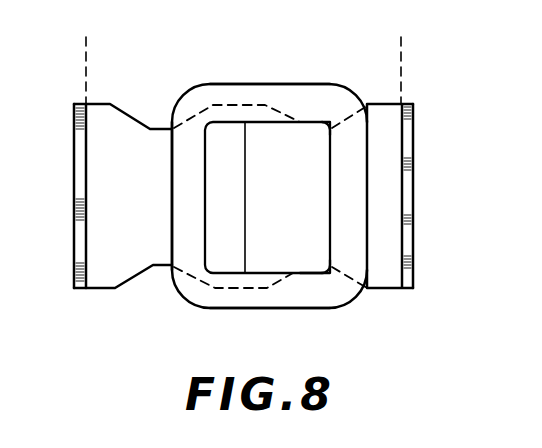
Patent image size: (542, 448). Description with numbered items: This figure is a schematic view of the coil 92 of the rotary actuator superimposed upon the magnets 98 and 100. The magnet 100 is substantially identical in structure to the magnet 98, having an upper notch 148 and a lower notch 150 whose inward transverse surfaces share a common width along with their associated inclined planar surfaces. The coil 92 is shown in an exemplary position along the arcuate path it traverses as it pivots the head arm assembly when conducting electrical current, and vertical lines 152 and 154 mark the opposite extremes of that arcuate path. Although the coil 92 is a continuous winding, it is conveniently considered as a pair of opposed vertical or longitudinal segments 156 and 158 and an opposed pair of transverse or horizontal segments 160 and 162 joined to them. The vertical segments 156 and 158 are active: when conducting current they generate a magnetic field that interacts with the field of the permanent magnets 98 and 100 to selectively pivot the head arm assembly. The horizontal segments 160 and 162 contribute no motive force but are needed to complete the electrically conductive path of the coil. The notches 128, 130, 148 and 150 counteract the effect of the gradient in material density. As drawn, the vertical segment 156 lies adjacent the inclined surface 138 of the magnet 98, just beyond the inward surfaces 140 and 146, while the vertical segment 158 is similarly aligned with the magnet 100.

The coil 92 is at (218, 94).
The magnet 98 is at (388, 183).
The magnet 100 is at (96, 175).
The notch 128 is at (320, 127).
The notch 130 is at (320, 267).
The inclined surface 138 is at (345, 113).
The inward surface 140 is at (322, 131).
The inward surface 146 is at (313, 266).
The upper notch 148 is at (133, 117).
The lower notch 150 is at (133, 277).
The vertical line 152 is at (86, 62).
The vertical line 154 is at (401, 62).
The vertical segment 156 is at (350, 236).
The vertical segment 158 is at (192, 177).
The horizontal segment 160 is at (276, 95).
The horizontal segment 162 is at (317, 297).